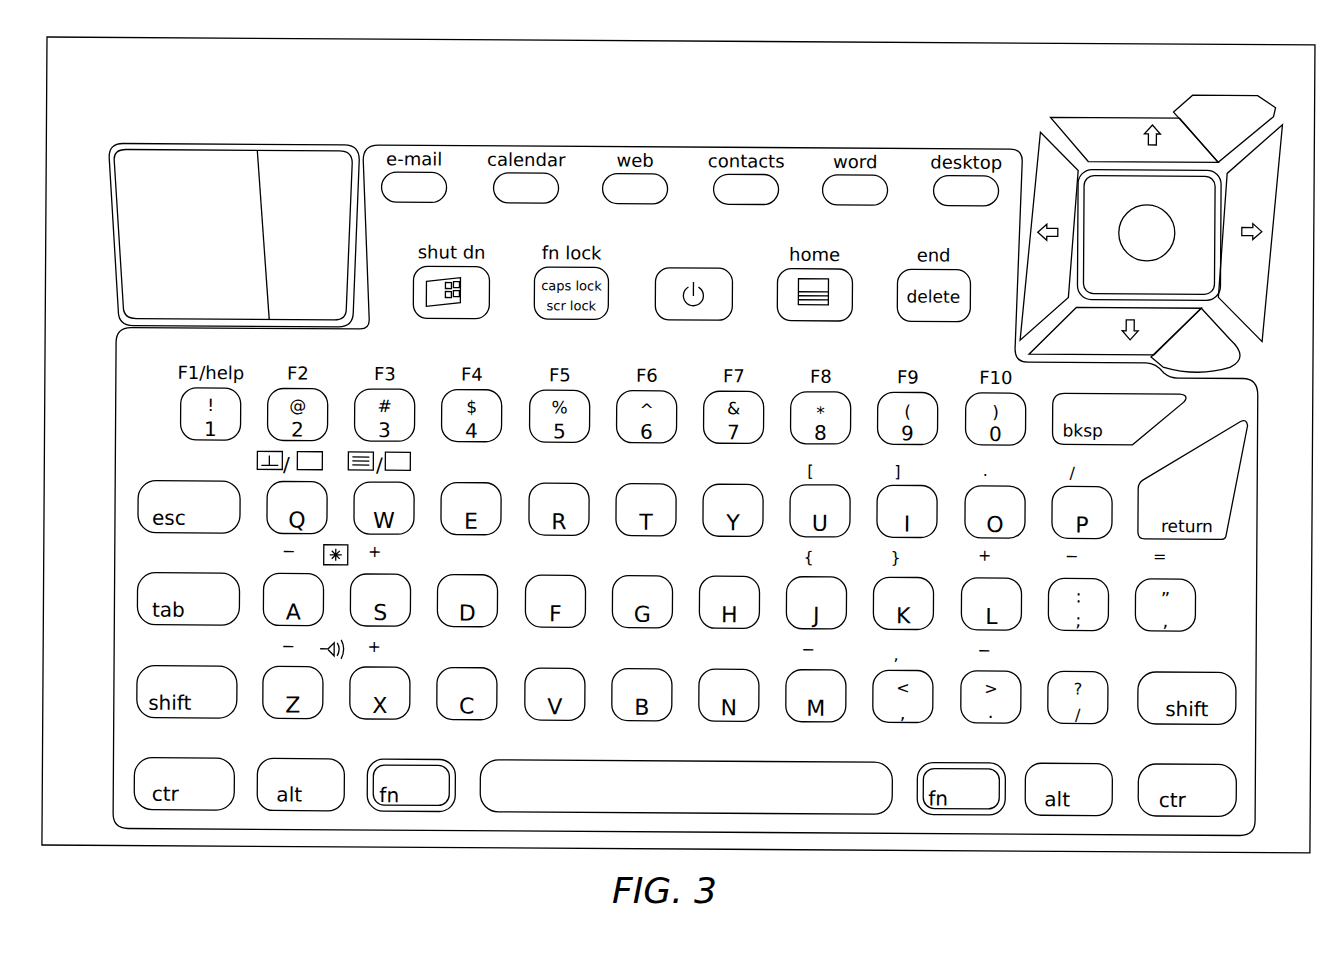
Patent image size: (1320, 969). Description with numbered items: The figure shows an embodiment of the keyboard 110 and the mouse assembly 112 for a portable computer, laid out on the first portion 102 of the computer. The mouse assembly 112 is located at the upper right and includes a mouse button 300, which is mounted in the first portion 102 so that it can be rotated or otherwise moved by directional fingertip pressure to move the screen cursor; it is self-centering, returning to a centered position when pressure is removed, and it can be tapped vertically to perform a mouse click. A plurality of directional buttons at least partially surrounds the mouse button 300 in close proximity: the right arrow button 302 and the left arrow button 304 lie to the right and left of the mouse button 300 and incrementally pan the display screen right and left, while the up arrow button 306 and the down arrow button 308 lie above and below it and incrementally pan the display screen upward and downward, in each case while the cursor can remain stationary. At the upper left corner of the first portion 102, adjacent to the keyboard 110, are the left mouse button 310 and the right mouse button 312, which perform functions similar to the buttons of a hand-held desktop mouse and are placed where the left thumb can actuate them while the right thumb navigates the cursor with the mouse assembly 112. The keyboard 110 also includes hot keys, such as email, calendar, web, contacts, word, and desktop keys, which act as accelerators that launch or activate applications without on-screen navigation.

The first portion 102 is at (557, 93).
The keyboard 110 is at (133, 550).
The mouse assembly 112 is at (1098, 234).
The mouse button 300 is at (1150, 221).
The right arrow button 302 is at (1247, 185).
The left arrow button 304 is at (1043, 171).
The up arrow button 306 is at (1124, 136).
The down arrow button 308 is at (1149, 318).
The left mouse button 310 is at (158, 233).
The right mouse button 312 is at (300, 197).